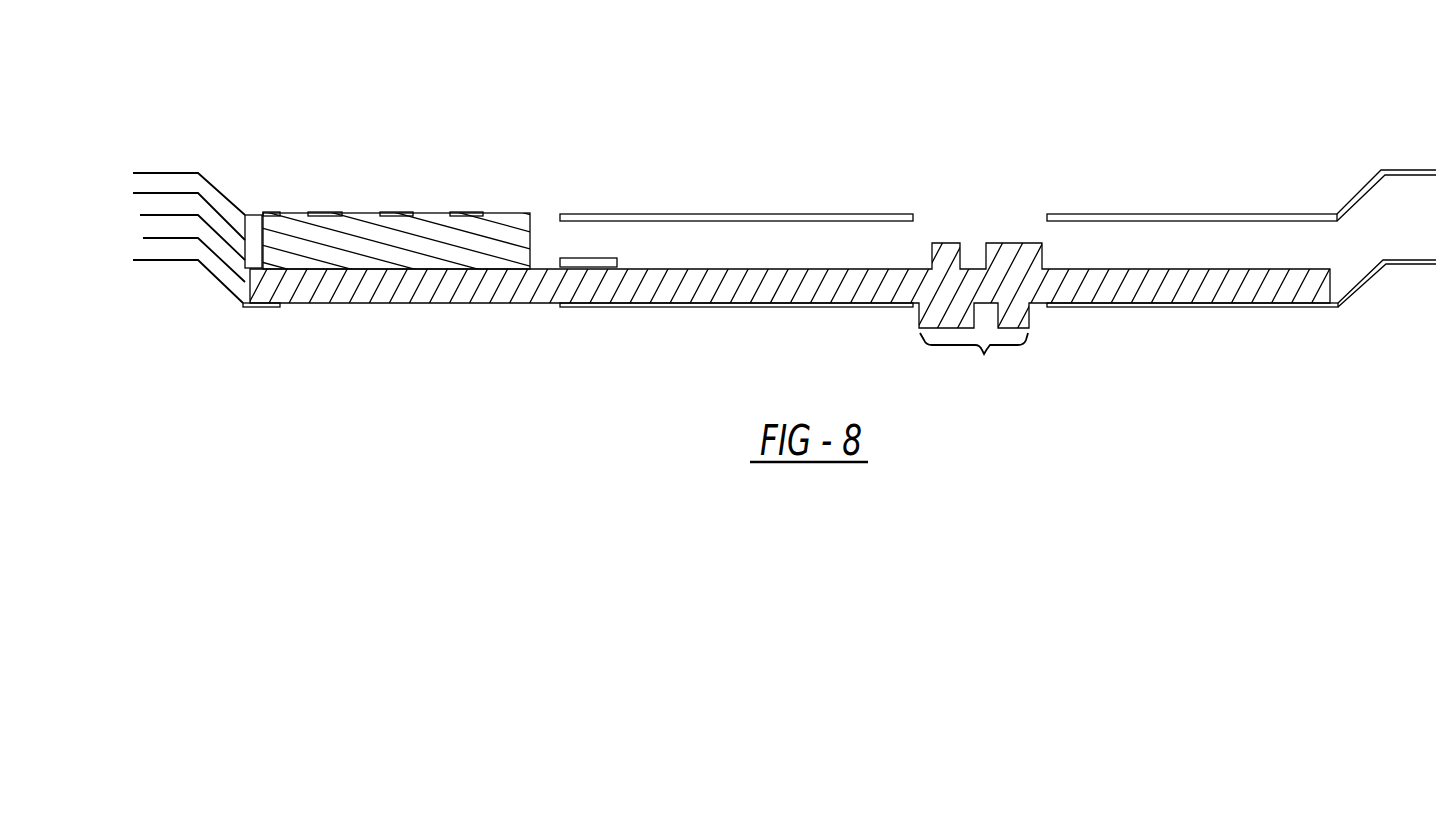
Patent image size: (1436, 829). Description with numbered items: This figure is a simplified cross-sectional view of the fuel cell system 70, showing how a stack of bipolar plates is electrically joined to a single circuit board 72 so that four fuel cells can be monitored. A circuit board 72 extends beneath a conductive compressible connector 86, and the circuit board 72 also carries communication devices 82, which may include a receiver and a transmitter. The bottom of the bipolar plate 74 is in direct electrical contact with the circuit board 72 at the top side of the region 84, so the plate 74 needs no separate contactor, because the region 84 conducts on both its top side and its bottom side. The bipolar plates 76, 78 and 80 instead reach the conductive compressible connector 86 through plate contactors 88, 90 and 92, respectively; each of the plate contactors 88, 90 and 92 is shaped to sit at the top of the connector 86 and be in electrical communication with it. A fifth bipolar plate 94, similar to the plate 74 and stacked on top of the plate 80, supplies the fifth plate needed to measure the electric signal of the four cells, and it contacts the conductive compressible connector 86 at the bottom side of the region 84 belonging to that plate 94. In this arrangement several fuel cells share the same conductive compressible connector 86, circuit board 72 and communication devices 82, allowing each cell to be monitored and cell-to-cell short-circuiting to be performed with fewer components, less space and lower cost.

The fuel cell system 70 is at (722, 105).
The circuit board 72 is at (447, 285).
The bipolar plate 74 is at (185, 262).
The bipolar plate 76 is at (158, 240).
The bipolar plate 78 is at (140, 217).
The bipolar plate 80 is at (133, 195).
The communication devices 82 is at (974, 370).
The region 84 is at (254, 215).
The conductive compressible connector 86 is at (530, 247).
The plate contactor 88 is at (470, 212).
The plate contactor 90 is at (402, 213).
The plate contactor 92 is at (322, 216).
The fifth bipolar plate 94 is at (158, 172).